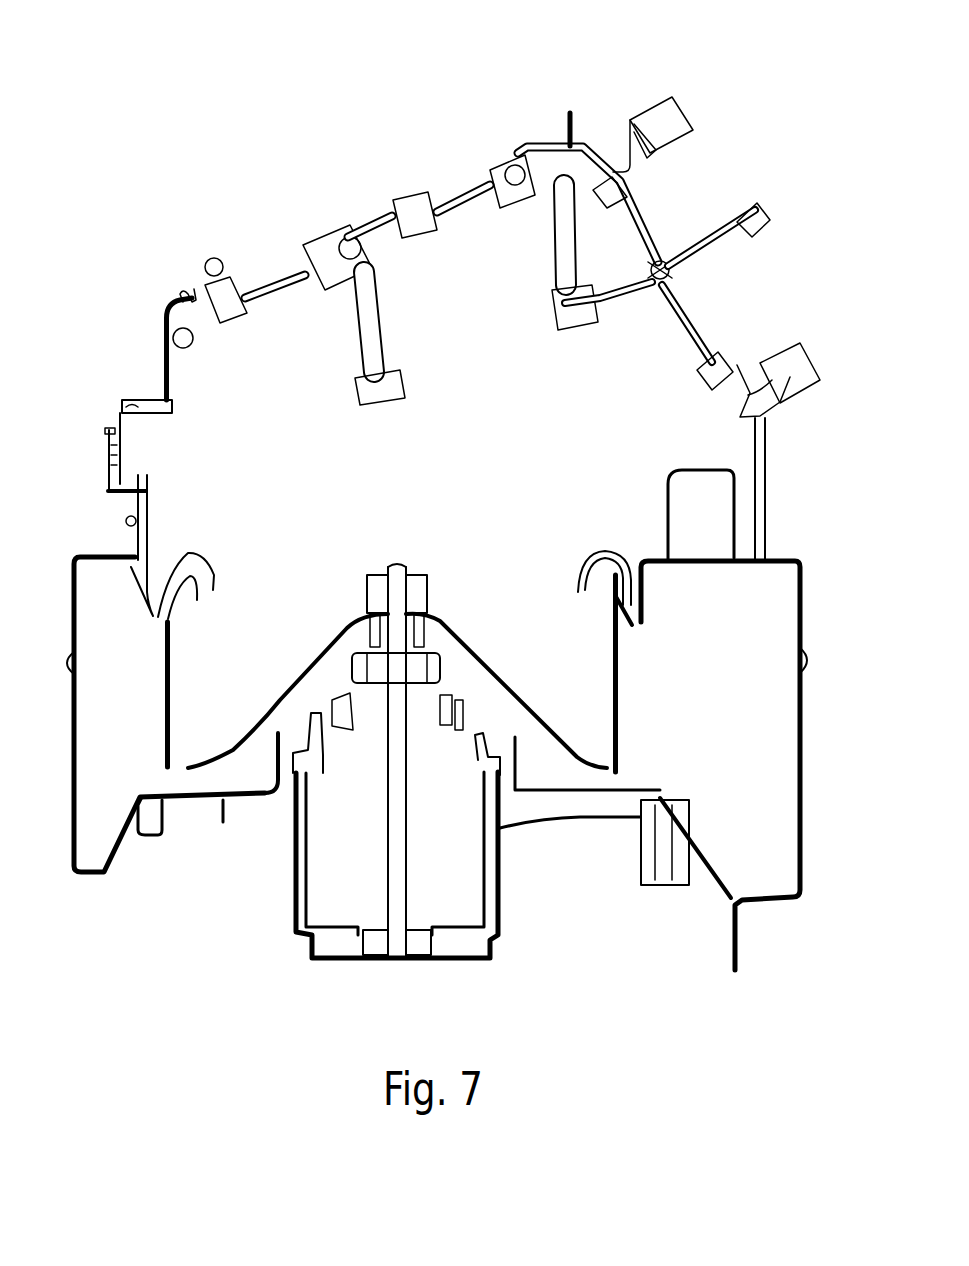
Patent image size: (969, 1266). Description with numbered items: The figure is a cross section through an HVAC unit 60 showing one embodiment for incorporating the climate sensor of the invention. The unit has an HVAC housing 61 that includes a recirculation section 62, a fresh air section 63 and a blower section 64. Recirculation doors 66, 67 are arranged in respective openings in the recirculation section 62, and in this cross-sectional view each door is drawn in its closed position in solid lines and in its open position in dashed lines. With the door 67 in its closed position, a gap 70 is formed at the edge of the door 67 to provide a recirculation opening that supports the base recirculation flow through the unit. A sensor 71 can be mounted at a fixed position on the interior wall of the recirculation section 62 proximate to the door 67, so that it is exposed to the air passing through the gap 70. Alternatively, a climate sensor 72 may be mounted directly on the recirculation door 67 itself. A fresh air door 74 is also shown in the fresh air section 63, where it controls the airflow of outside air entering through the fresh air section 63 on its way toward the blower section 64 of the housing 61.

The HVAC unit 60 is at (446, 533).
The HVAC housing 61 is at (137, 523).
The recirculation section 62 is at (164, 357).
The fresh air section 63 is at (786, 363).
The blower section 64 is at (805, 800).
The recirculation door 66 is at (463, 190).
The recirculation door 67 is at (274, 278).
The gap 70 is at (192, 296).
The sensor 71 is at (188, 349).
The climate sensor 72 is at (214, 258).
The fresh air door 74 is at (648, 238).